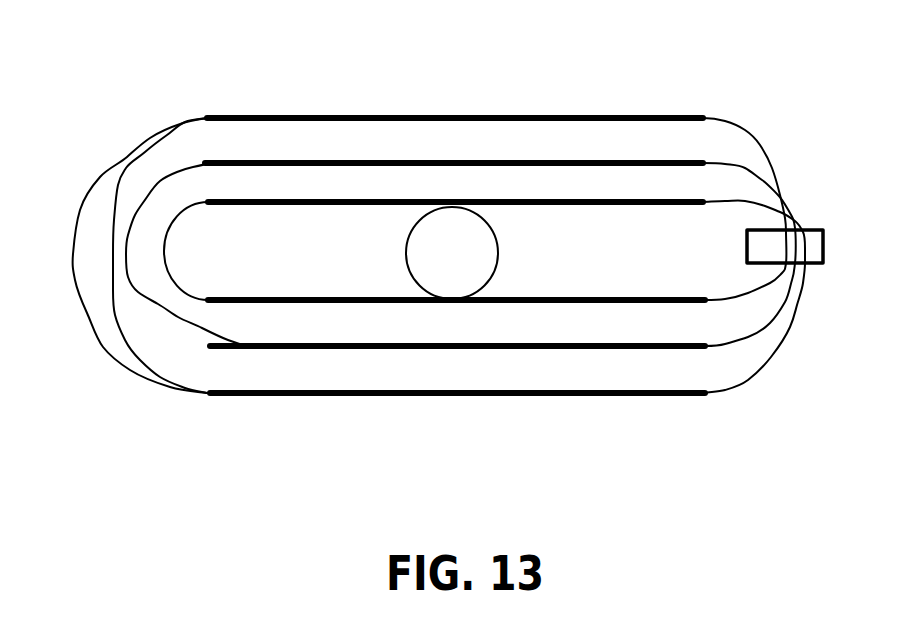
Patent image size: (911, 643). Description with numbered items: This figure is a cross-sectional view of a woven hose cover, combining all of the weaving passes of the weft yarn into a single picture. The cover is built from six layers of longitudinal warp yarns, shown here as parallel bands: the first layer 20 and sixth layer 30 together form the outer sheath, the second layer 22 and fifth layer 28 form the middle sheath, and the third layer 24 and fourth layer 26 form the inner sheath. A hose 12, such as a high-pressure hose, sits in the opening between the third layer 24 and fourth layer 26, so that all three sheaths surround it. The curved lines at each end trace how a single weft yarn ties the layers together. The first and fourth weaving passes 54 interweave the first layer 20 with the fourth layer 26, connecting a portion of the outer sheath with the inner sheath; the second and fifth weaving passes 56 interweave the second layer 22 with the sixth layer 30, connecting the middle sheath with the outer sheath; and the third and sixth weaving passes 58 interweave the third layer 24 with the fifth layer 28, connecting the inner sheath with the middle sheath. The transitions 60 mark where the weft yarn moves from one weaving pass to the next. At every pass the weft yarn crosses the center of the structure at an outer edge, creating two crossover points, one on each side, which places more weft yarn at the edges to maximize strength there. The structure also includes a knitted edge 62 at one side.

The hose 12 is at (485, 213).
The first layer 20 is at (282, 113).
The second layer 22 is at (584, 158).
The third layer 24 is at (660, 197).
The fourth layer 26 is at (592, 303).
The fifth layer 28 is at (430, 350).
The sixth layer 30 is at (255, 400).
The first and fourth weaving passes 54 is at (118, 165).
The second and fifth weaving passes 56 is at (130, 284).
The third and sixth weaving passes 58 is at (173, 262).
The transition 60 is at (182, 245).
The knitted edge 62 is at (823, 247).